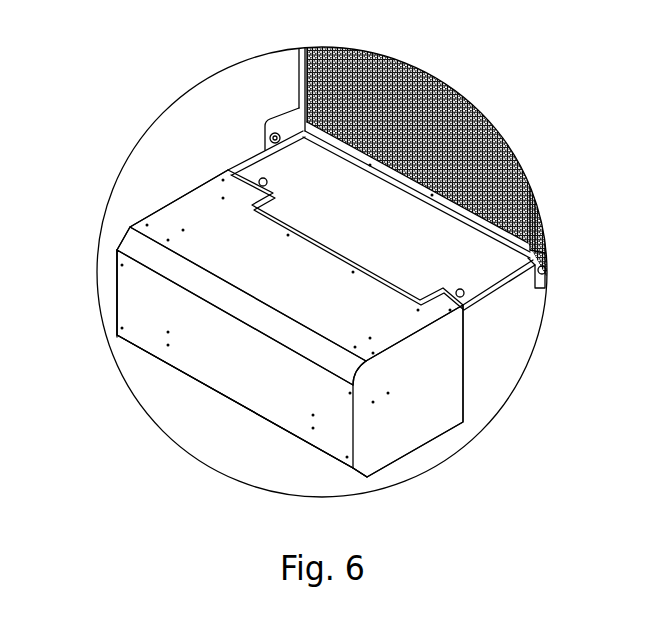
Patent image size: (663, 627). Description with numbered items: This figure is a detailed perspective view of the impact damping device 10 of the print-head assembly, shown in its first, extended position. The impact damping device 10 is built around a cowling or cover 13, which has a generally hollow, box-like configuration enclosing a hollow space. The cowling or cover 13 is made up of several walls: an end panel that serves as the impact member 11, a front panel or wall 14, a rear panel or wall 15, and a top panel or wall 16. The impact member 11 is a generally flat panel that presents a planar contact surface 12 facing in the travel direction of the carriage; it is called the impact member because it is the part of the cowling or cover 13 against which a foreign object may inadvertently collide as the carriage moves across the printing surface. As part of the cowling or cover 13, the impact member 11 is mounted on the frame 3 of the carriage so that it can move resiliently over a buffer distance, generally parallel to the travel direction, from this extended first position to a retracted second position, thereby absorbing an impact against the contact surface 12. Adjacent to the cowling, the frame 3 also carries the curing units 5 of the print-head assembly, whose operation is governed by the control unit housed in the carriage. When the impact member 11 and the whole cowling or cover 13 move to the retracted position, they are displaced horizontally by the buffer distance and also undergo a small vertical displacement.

The impact damping device 10 is at (160, 170).
The cowling or cover 13 is at (130, 220).
The rear panel or wall 15 is at (50, 309).
The impact member 11 is at (203, 358).
The contact surface 12 is at (262, 391).
The front panel or wall 14 is at (408, 430).
The top panel or wall 16 is at (312, 292).
The frame 3 is at (495, 372).
The curing units 5 is at (450, 271).